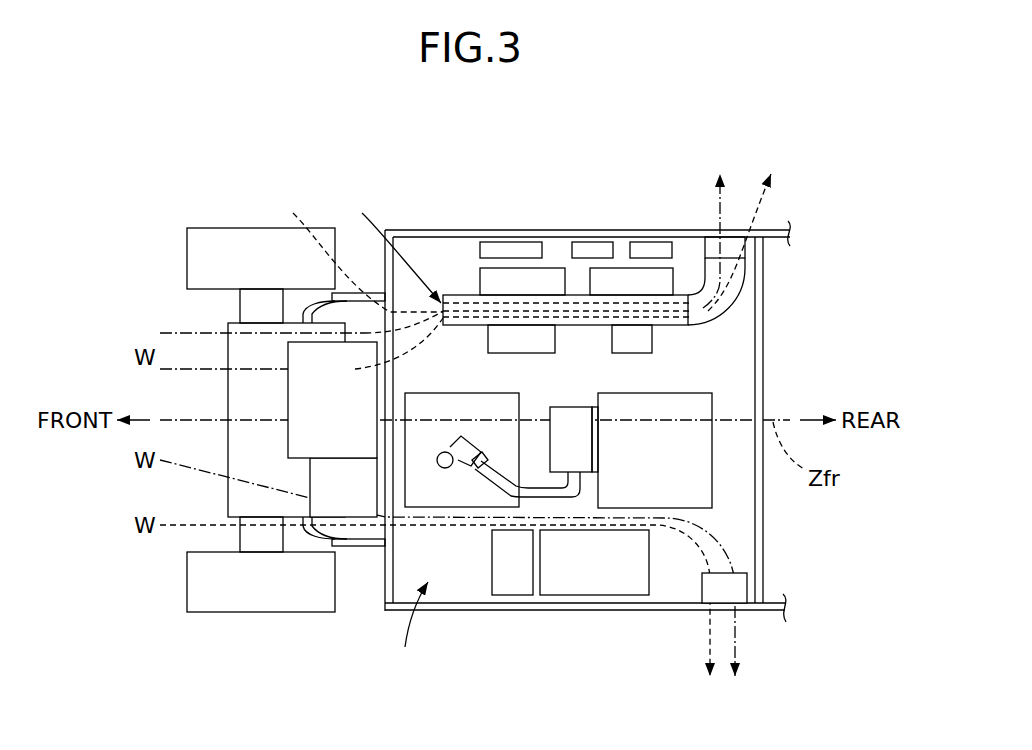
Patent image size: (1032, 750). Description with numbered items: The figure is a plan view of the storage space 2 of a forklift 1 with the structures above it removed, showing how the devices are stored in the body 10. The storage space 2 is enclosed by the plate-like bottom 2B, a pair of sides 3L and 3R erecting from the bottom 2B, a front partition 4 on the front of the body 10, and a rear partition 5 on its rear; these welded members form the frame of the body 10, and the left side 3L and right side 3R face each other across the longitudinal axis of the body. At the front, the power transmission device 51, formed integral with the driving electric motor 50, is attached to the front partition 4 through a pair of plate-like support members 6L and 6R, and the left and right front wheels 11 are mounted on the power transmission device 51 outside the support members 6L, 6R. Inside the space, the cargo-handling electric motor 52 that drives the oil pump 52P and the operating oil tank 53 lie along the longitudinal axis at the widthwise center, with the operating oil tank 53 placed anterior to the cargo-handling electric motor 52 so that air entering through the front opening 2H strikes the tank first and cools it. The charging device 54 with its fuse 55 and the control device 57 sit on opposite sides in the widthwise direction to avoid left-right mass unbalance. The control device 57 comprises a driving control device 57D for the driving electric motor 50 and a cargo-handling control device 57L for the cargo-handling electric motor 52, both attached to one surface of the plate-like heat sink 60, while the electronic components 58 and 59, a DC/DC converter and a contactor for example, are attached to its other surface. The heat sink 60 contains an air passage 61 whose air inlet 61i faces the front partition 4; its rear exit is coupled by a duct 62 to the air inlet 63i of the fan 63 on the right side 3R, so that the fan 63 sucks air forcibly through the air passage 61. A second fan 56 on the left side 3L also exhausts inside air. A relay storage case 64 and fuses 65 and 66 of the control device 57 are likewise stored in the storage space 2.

The vehicle 1 is at (157, 161).
The front wheel 11 is at (240, 243).
The storage space 2 is at (572, 423).
The opening 2H is at (355, 253).
The bottom 2B is at (405, 629).
The right side 3R is at (443, 234).
The left side 3L is at (450, 609).
The front partition 4 is at (385, 608).
The rear partition 5 is at (764, 340).
The support member 6R is at (362, 292).
The support member 6L is at (360, 546).
The body 10 is at (775, 303).
The driving electric motor 50 is at (303, 442).
The power transmission device 51 is at (237, 389).
The cargo-handling electric motor 52 is at (700, 454).
The oil pump 52P is at (575, 404).
The operating oil tank 53 is at (450, 505).
The charging device 54 is at (580, 585).
The fuse 55 is at (511, 585).
The fan 56 is at (707, 597).
The control device 57 is at (599, 198).
The driving control device 57D is at (553, 280).
The cargo-handling control device 57L is at (680, 283).
The electronic component 58 is at (648, 346).
The electronic component 59 is at (552, 344).
The heat sink 60 is at (542, 317).
The air passage 61 is at (462, 318).
The air inlet 61i is at (382, 250).
The duct 62 is at (715, 304).
The fan 63 is at (755, 265).
The air inlet 63i is at (741, 263).
The relay storage case 64 is at (491, 249).
The fuse 65 is at (584, 249).
The fuse 66 is at (634, 251).